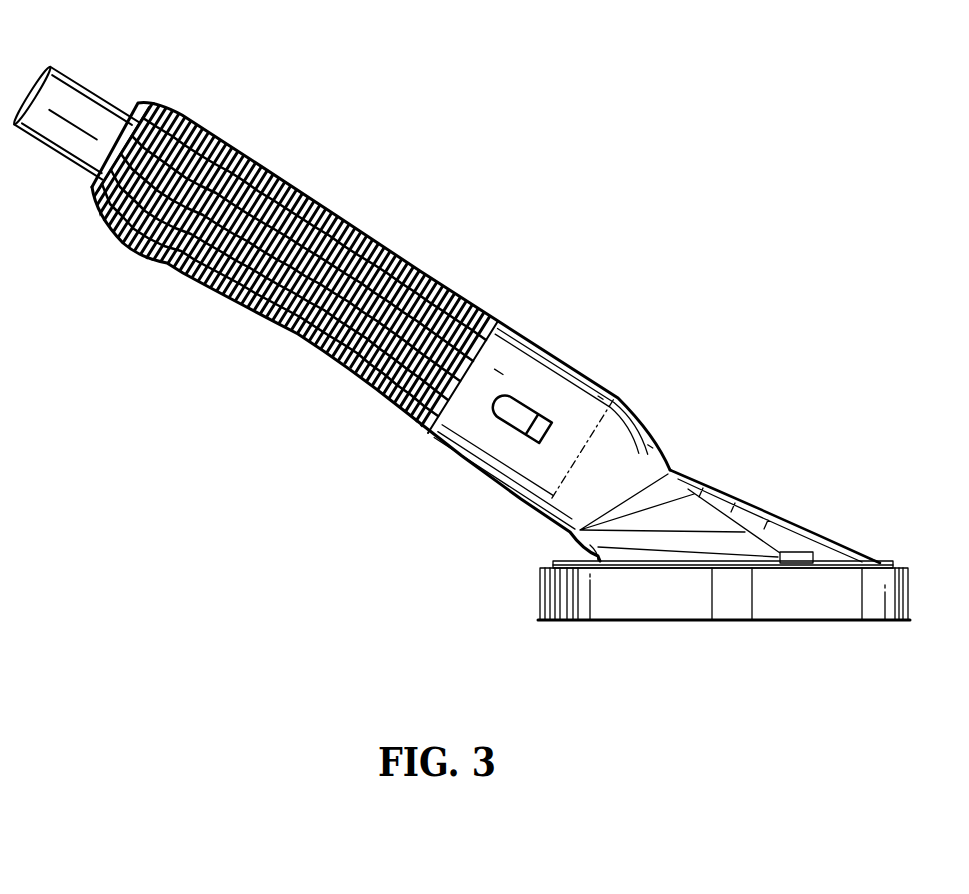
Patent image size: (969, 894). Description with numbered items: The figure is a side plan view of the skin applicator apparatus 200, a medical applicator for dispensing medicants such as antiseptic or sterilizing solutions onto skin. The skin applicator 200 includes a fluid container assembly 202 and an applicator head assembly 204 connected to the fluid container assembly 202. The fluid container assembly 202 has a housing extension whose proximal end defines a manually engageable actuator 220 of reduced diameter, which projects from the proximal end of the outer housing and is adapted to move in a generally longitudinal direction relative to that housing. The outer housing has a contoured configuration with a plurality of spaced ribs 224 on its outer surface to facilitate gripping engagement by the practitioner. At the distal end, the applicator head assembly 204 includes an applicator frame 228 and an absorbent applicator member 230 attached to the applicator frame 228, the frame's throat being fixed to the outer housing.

The skin applicator apparatus 200 is at (445, 284).
The fluid container assembly 202 is at (371, 324).
The applicator head assembly 204 is at (760, 483).
The manually engageable actuator 220 is at (71, 100).
The spaced ribs 224 is at (262, 312).
The applicator frame 228 is at (625, 437).
The absorbent applicator member 230 is at (650, 606).